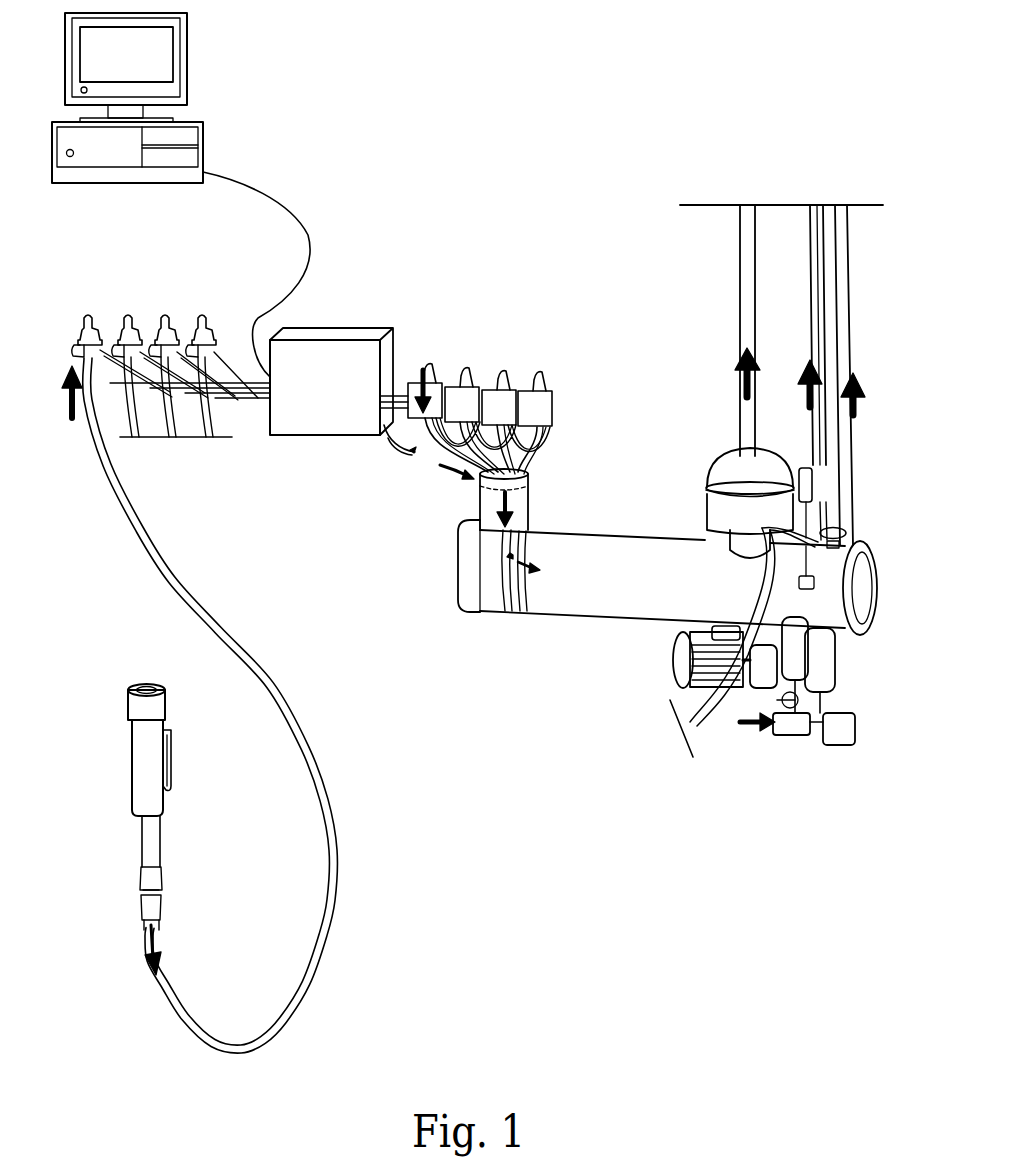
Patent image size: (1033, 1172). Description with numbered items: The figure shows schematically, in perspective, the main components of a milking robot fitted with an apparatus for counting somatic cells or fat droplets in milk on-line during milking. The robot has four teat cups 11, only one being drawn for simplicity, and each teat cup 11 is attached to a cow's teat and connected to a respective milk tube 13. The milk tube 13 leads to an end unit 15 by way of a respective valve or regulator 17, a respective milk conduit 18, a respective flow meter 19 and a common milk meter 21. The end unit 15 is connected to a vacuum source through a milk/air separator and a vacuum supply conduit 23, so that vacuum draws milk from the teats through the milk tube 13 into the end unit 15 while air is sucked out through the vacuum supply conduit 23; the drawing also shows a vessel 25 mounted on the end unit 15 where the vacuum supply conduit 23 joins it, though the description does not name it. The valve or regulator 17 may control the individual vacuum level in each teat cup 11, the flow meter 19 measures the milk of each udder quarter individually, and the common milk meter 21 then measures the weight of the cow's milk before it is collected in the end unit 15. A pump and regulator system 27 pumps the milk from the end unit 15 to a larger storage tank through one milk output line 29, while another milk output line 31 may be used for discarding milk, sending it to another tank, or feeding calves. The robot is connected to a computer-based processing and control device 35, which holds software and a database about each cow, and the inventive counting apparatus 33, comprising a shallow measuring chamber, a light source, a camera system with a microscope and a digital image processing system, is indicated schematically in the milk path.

The teat cup 11 is at (132, 745).
The milk tube 13 is at (173, 563).
The end unit 15 is at (563, 613).
The valve or regulator 17 is at (88, 315).
The milk conduit 18 is at (233, 378).
The flow meter 19 is at (430, 365).
The common milk meter 21 is at (533, 502).
The vacuum supply conduit 23 is at (740, 318).
The tank 25 is at (707, 465).
The pump and regulator system 27 is at (665, 660).
The milk output line 29 is at (853, 320).
The milk output line 31 is at (820, 280).
The apparatus for counting somatic cells or fat droplets 33 is at (310, 327).
The computer-based processing and control device 35 is at (203, 133).